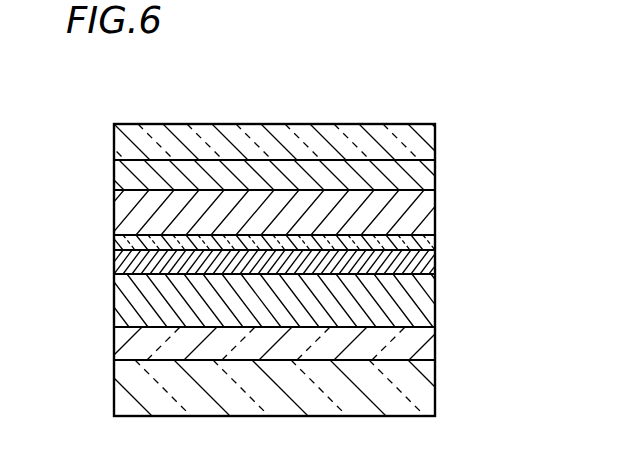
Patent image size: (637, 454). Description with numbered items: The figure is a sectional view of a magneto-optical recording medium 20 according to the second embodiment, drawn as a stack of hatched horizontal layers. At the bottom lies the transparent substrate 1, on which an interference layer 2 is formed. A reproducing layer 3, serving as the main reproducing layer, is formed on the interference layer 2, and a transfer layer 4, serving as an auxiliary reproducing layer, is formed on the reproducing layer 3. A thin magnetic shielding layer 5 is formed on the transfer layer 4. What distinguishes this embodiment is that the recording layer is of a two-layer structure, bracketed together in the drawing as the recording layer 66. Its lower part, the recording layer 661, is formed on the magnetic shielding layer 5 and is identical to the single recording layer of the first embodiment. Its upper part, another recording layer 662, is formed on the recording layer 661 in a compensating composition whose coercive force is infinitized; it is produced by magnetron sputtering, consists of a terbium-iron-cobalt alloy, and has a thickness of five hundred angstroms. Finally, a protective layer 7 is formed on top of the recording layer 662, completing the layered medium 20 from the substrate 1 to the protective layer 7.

The magneto-optical recording medium 20 is at (284, 227).
The protective layer 7 is at (437, 140).
The protective layer 66 is at (318, 197).
The recording layer 662 is at (437, 175).
The recording layer 661 is at (437, 213).
The magnetic shielding layer 5 is at (437, 244).
The transfer layer 4 is at (437, 267).
The reproducing layer 3 is at (437, 305).
The interference layer 2 is at (437, 343).
The transparent substrate 1 is at (420, 383).